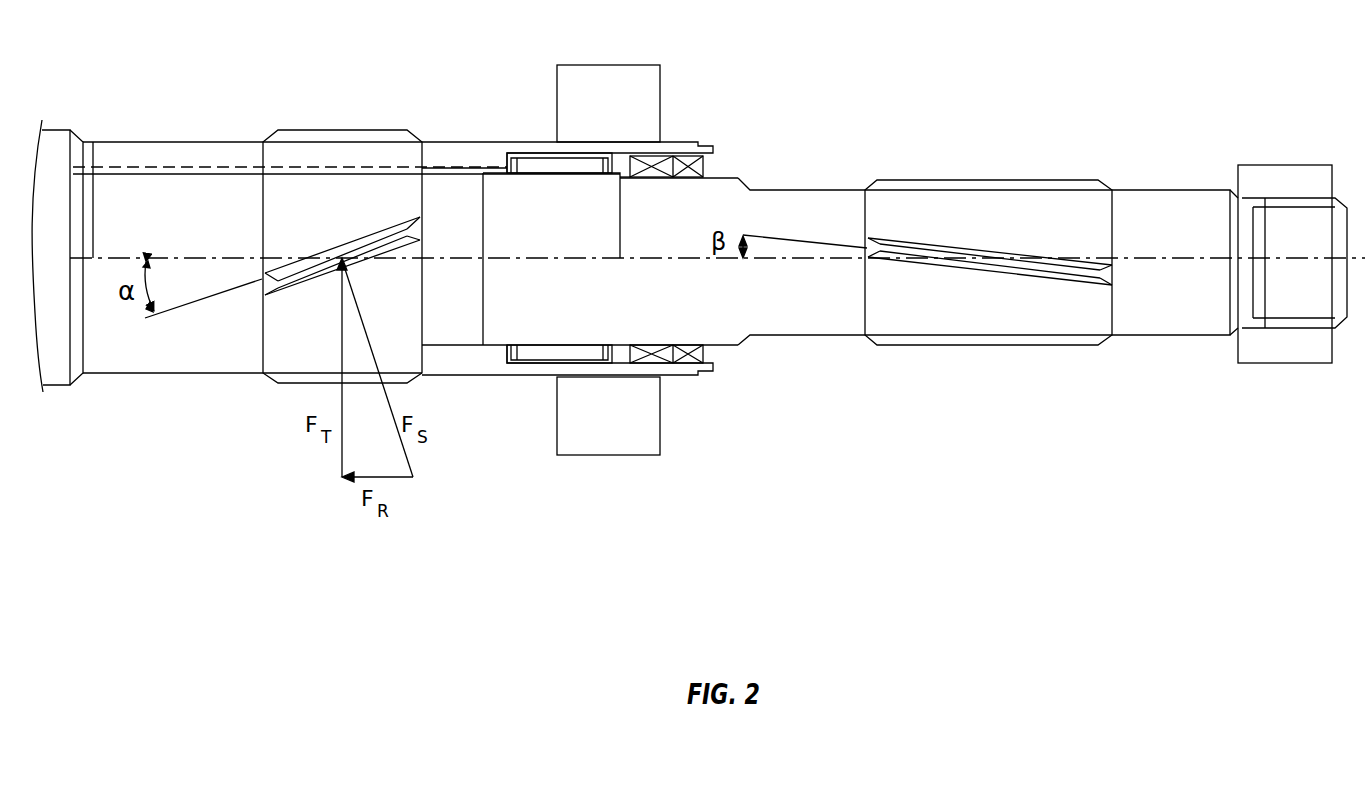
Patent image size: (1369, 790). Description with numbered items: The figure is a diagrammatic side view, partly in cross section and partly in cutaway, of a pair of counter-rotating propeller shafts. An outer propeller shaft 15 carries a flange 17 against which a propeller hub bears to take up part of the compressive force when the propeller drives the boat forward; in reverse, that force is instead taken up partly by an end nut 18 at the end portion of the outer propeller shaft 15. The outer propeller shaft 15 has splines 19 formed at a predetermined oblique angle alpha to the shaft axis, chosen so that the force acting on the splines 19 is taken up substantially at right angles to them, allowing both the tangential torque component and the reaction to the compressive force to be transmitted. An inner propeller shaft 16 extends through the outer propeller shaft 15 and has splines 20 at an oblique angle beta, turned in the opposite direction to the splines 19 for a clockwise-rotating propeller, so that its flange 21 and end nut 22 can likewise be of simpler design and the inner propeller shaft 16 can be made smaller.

The outer propeller shaft 15 is at (168, 375).
The inner propeller shaft 16 is at (800, 337).
The flange 17 is at (77, 143).
The end nut 18 is at (608, 75).
The splines 19 is at (380, 227).
The splines 20 is at (997, 248).
The flange 21 is at (750, 178).
The end nut 22 is at (1290, 173).